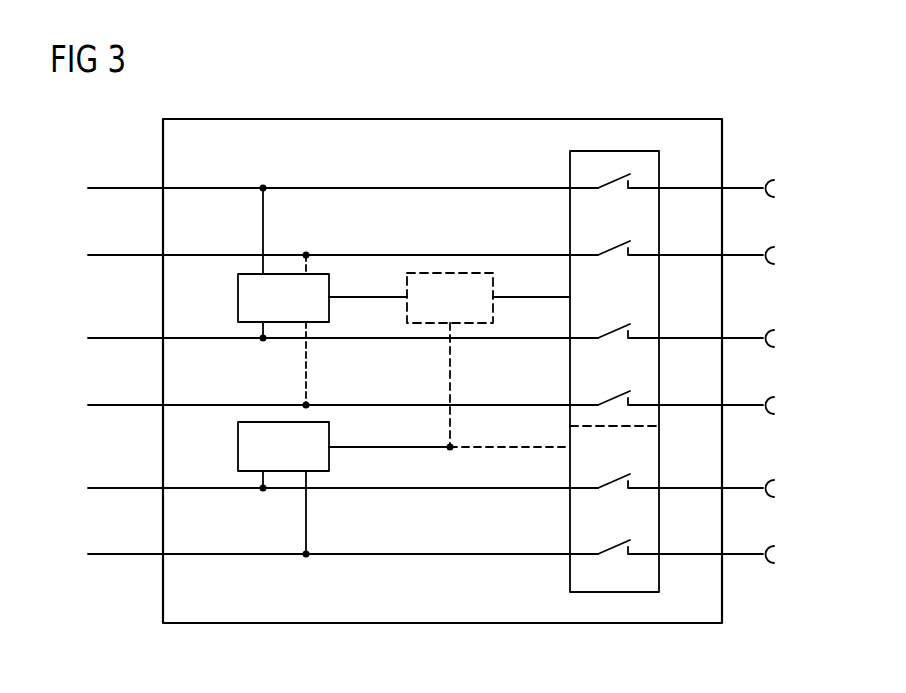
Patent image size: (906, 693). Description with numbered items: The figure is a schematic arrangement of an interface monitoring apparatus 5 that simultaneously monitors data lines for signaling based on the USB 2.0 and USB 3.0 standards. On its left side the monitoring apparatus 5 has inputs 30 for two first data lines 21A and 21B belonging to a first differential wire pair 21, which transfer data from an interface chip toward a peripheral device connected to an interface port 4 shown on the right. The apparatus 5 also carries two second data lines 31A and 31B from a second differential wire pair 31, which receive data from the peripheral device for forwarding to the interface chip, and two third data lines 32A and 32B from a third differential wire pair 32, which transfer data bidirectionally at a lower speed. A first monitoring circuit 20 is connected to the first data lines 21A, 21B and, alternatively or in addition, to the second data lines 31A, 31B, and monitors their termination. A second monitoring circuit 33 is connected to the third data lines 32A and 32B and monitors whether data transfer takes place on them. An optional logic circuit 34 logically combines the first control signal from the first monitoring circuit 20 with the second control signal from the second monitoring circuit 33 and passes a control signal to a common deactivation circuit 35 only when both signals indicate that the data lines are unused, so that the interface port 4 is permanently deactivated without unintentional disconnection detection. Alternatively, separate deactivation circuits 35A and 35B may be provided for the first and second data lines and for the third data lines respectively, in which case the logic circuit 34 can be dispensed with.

The interface port 4 is at (768, 573).
The interface monitoring apparatus 5 is at (445, 624).
The first monitoring circuit 20 is at (238, 298).
The first differential wire pair 21 is at (322, 198).
The first data line 21A is at (112, 188).
The first data line 21B is at (80, 183).
The inputs 30 is at (322, 394).
The second differential wire pair 31 is at (322, 349).
The second data line 31A is at (112, 338).
The second data line 31B is at (343, 381).
The third differential wire pair 32 is at (322, 497).
The third data line 32A is at (112, 488).
The third data line 32B is at (108, 573).
The second monitoring circuit 33 is at (238, 448).
The logic circuit 34 is at (494, 301).
The common deactivation circuit 35 is at (615, 374).
The separate deactivation circuit 35A is at (650, 300).
The separate deactivation circuit 35B is at (650, 455).